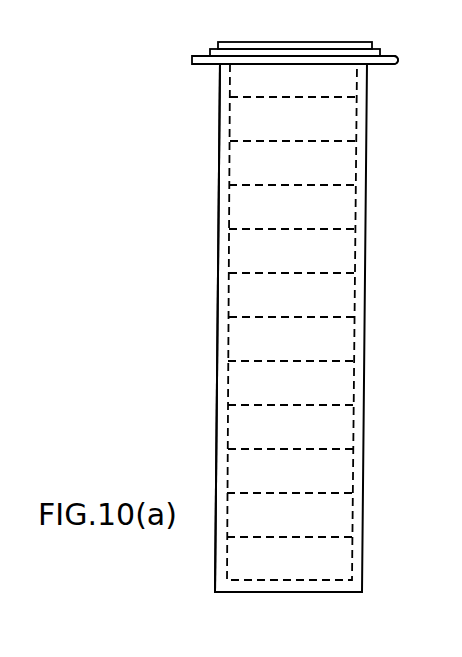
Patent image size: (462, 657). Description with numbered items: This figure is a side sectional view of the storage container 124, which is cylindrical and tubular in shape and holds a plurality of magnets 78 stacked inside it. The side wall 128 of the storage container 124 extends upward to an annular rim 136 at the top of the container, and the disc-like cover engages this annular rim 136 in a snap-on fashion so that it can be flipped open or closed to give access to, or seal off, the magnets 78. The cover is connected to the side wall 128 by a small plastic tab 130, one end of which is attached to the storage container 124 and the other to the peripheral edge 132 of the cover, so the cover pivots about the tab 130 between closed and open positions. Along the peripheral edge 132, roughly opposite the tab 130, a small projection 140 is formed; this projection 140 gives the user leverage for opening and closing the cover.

The magnets 78 is at (233, 249).
The storage container 124 is at (427, 340).
The side wall 128 is at (322, 43).
The tab 130 is at (390, 67).
The peripheral edge 132 is at (263, 52).
The annular rim 136 is at (243, 65).
The projection 140 is at (196, 60).